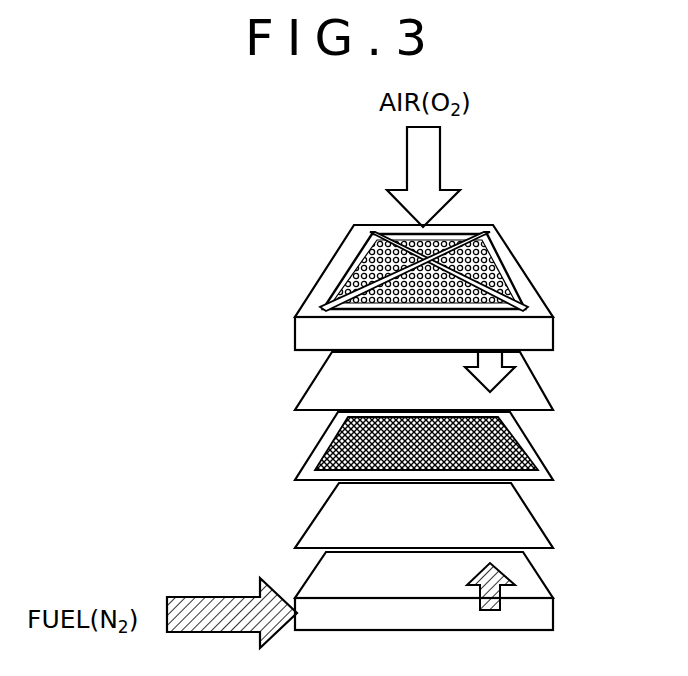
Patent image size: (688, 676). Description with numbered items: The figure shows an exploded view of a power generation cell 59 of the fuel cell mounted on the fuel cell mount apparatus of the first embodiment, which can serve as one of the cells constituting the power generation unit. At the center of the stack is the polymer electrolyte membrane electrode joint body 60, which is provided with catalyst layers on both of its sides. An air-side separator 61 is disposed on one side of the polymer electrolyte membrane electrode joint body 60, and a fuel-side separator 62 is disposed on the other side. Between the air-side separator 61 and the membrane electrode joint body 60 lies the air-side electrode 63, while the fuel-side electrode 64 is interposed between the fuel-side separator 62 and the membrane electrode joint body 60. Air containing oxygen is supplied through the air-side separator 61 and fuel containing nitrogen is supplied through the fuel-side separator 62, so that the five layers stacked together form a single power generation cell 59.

The power generation cell 59 is at (302, 232).
The air-side separator 61 is at (553, 334).
The air-side electrode 63 is at (553, 396).
The polymer electrolyte membrane electrode joint body 60 is at (553, 466).
The fuel-side electrode 64 is at (553, 534).
The fuel-side separator 62 is at (553, 614).